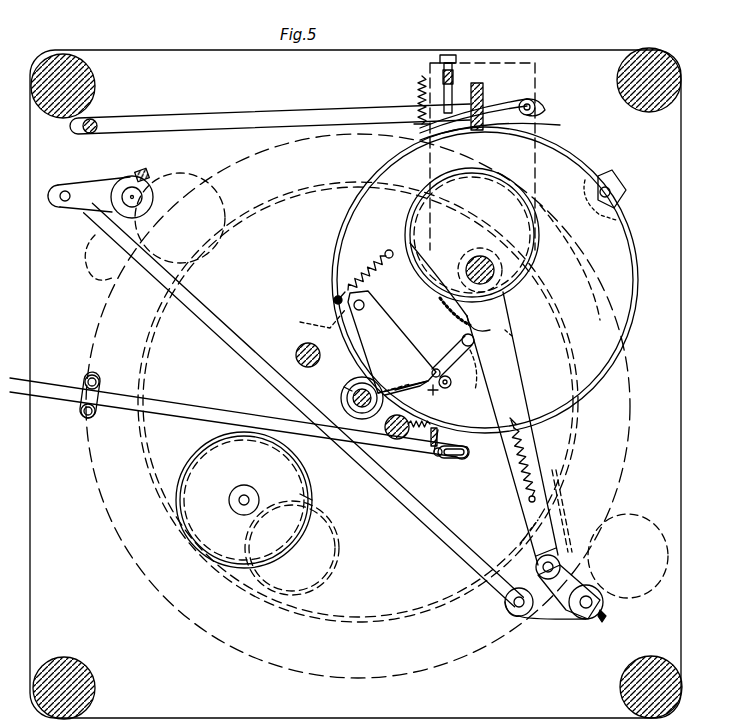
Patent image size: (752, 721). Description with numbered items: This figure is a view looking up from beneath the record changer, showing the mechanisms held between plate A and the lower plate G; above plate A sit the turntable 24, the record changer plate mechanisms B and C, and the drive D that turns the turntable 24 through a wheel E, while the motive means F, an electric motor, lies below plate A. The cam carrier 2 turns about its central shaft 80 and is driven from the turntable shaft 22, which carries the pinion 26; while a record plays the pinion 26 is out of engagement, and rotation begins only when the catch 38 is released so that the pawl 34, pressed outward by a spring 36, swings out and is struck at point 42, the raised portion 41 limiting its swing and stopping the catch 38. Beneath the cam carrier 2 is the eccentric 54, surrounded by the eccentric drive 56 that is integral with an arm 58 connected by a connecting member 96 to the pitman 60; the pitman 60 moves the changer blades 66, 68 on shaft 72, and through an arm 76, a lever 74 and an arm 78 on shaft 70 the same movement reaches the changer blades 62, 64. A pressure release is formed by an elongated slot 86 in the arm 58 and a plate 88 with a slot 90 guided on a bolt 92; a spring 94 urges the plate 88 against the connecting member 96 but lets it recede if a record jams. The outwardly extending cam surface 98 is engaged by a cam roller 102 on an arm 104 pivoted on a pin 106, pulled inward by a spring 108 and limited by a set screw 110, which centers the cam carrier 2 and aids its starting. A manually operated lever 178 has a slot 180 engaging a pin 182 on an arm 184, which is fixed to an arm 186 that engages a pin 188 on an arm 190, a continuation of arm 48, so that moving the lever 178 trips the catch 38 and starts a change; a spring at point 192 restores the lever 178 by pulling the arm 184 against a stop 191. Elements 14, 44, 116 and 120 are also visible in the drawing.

The cam carrier 2 is at (485, 280).
The bracket 14 is at (626, 212).
The turntable shaft 22 is at (352, 388).
The turntable 24 is at (422, 612).
The pinion 26 is at (384, 427).
The pawl 34 is at (394, 342).
The spring 36 is at (366, 262).
The catch 38 is at (440, 352).
The raised portion 41 is at (405, 382).
The point 42 is at (382, 380).
The stop pin 44 is at (334, 300).
The arm 48 is at (552, 270).
The eccentric 54 is at (472, 235).
The eccentric drive 56 is at (436, 282).
The arm 58 is at (525, 348).
The pitman 60 is at (565, 570).
The changer blade 62 is at (192, 174).
The changer blade 64 is at (85, 276).
The changer blade 66 is at (648, 534).
The changer blade 68 is at (519, 617).
The shaft 70 is at (125, 180).
The shaft 72 is at (586, 620).
The lever 74 is at (400, 508).
The arm 76 is at (558, 620).
The arm 78 is at (80, 186).
The shaft 80 is at (468, 258).
The elongated slot 86 is at (528, 530).
The plate 88 is at (556, 548).
The slot 90 is at (513, 460).
The bolt 92 is at (559, 504).
The spring 94 is at (522, 425).
The connecting member 96 is at (536, 562).
The cam surface 98 is at (545, 124).
The cam roller 102 is at (536, 108).
The arm 104 is at (506, 110).
The pin 106 is at (484, 90).
The spring 108 is at (416, 90).
The set screw 110 is at (440, 68).
The bar 116 is at (318, 109).
The hook 120 is at (537, 100).
The manually operated lever 178 is at (226, 410).
The slot 180 is at (468, 448).
The pin 182 is at (440, 458).
The arm 184 is at (448, 401).
The arm 186 is at (452, 382).
The pin 188 is at (480, 366).
The arm 190 is at (512, 333).
The stop 191 is at (453, 436).
The point 192 is at (425, 432).
The plate A is at (700, 408).
The record changer plate mechanism B is at (151, 169).
The record changer plate mechanism C is at (618, 615).
The drive D is at (238, 520).
The wheel E is at (336, 568).
The motive means F is at (310, 500).
The lower plate G is at (312, 338).